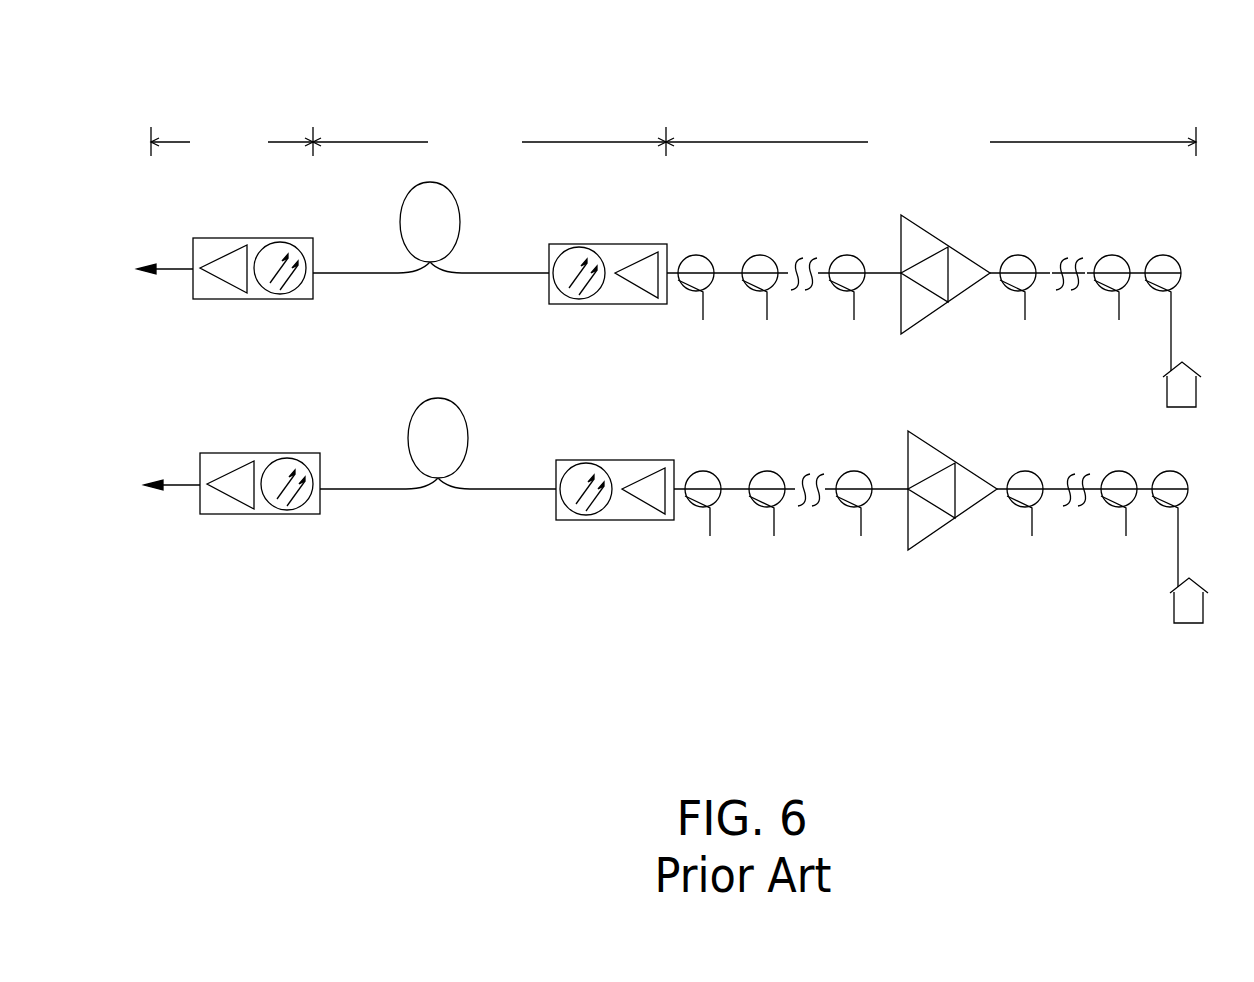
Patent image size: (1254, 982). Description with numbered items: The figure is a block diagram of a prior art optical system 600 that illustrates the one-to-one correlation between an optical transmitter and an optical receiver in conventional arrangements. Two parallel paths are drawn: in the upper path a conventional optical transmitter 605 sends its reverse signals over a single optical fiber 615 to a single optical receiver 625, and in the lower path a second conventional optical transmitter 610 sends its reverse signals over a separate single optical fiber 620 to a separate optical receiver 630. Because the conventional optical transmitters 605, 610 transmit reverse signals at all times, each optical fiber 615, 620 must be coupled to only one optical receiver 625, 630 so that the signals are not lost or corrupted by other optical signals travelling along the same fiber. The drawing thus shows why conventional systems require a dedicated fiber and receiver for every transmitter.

The prior art optical system 600 is at (1057, 40).
The optical transmitter 605 is at (632, 244).
The optical transmitter 610 is at (637, 460).
The optical fiber 615 is at (455, 207).
The optical fiber 620 is at (463, 422).
The optical receiver 625 is at (287, 238).
The optical receiver 630 is at (283, 453).